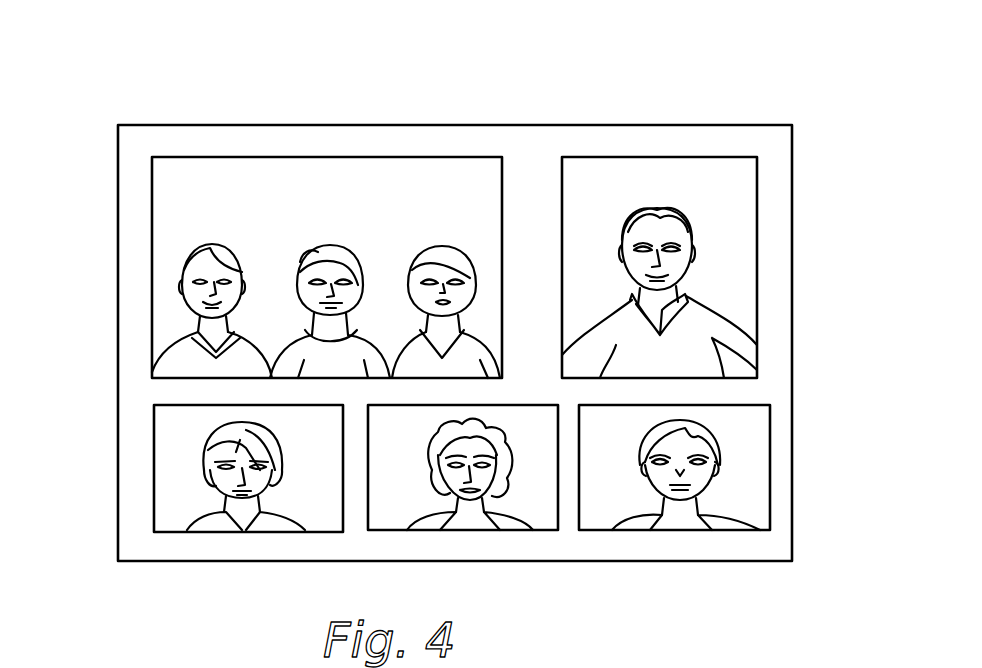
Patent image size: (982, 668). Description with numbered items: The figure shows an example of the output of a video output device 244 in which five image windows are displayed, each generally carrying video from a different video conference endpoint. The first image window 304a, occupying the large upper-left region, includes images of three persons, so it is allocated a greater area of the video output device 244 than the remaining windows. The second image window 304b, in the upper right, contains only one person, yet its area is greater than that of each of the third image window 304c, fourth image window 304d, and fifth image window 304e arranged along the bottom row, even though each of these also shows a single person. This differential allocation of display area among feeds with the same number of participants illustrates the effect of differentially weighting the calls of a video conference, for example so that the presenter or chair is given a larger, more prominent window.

The video output device 244 is at (792, 320).
The first image window 304a is at (297, 157).
The second image window 304b is at (660, 157).
The third image window 304c is at (154, 467).
The fourth image window 304d is at (512, 530).
The fifth image window 304e is at (695, 530).